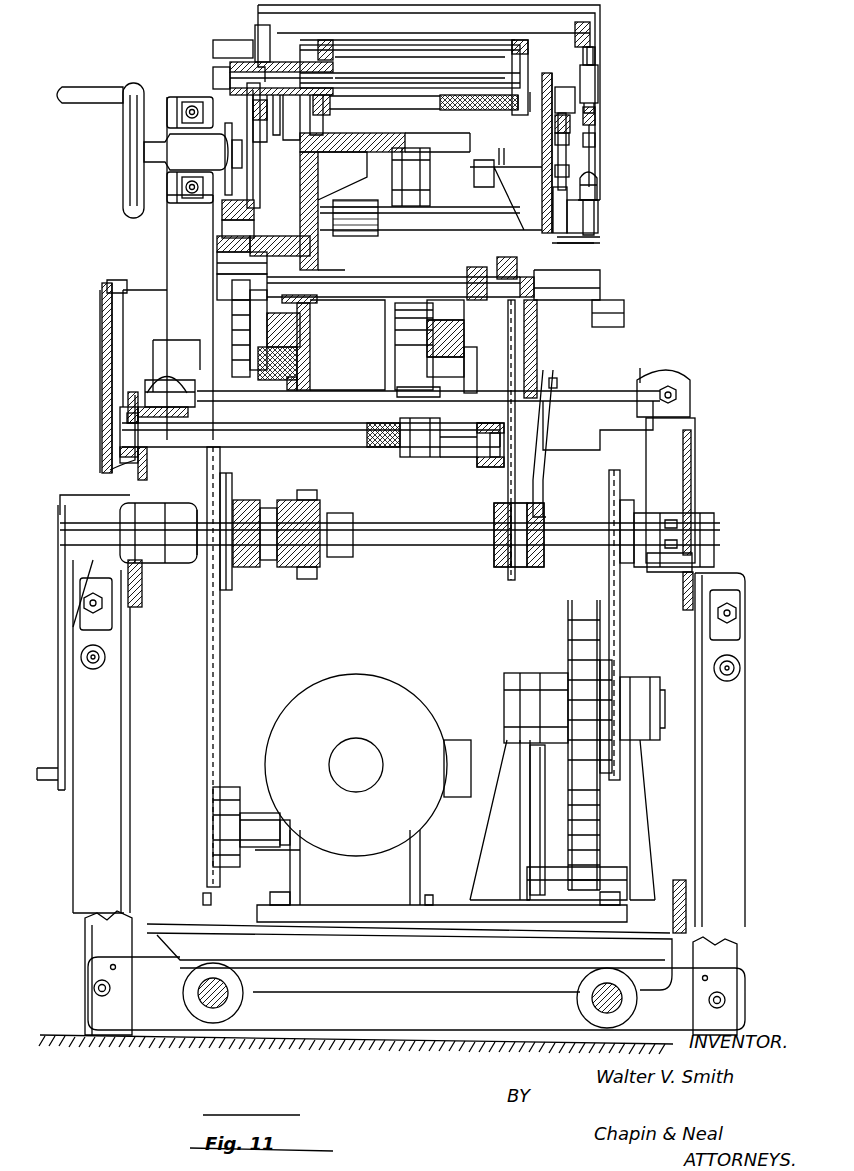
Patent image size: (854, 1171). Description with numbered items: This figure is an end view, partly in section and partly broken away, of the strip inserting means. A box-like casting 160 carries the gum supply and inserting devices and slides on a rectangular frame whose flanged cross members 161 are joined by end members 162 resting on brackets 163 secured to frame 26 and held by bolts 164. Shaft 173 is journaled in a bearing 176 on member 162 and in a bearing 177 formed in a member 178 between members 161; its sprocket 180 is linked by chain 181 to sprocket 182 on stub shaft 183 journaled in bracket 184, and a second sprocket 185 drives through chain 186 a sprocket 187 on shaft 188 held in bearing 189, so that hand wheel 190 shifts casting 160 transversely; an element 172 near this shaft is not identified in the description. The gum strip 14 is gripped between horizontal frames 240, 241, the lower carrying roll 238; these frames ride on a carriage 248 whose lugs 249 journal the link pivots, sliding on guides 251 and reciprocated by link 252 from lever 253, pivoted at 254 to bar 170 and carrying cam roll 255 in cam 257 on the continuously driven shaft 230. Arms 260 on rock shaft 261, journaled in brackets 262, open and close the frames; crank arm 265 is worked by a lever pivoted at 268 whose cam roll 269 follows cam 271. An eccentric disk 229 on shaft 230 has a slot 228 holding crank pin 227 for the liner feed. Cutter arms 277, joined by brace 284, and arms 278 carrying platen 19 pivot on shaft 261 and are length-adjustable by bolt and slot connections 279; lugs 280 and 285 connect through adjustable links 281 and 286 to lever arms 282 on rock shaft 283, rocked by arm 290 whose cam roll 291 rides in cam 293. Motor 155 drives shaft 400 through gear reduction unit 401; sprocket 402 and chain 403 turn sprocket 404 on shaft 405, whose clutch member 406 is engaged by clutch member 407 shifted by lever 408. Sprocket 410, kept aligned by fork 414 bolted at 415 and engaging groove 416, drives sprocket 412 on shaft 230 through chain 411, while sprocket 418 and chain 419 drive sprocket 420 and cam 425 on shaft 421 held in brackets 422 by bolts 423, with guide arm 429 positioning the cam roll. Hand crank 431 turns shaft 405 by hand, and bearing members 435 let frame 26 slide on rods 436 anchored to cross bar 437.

The strip or web 14 is at (385, 60).
The platen 19 is at (568, 145).
The frame 26 is at (112, 635).
The motor 155 is at (348, 685).
The box-like casting 160 is at (336, 350).
The flanged cross members 161 is at (615, 392).
The end members 162 is at (215, 423).
The brackets 163 is at (695, 450).
The bolts 164 is at (155, 375).
The bar 170 is at (395, 402).
The nut 172 is at (422, 458).
The shaft 173 is at (392, 450).
The bearing 176 is at (135, 462).
The bearing 177 is at (480, 467).
The member 178 is at (495, 468).
The sprocket 180 is at (118, 415).
The chain 181 is at (123, 380).
The sprocket 182 is at (107, 283).
The stub shaft 183 is at (100, 320).
The bracket 184 is at (167, 250).
The second sprocket 185 is at (217, 285).
The chain 186 is at (217, 265).
The sprocket 187 is at (240, 110).
The shaft 188 is at (250, 200).
The bearing 189 is at (172, 135).
The hand wheel 190 is at (122, 147).
The crank pin 227 is at (625, 318).
The slot 228 is at (600, 275).
The eccentric disk 229 is at (600, 288).
The shaft 230 is at (413, 317).
The roll 238 is at (495, 112).
The horizontal frame 240 is at (470, 30).
The horizontal frame 241 is at (445, 112).
The carriage 248 is at (410, 140).
The lugs 249 is at (355, 130).
The guides 251 is at (340, 165).
The link 252 is at (410, 188).
The lever 253 is at (398, 268).
The pivot 254 is at (410, 330).
The cam roll 255 is at (498, 265).
The cam 257 is at (485, 375).
The arms 260 is at (340, 35).
The rock shaft 261 is at (430, 58).
The brackets 262 is at (297, 60).
The crank arm 265 is at (240, 85).
The pivot 268 is at (268, 380).
The cam roll 269 is at (217, 246).
The cam 271 is at (312, 247).
The cutter arms 277 is at (592, 30).
The arms 278 is at (596, 125).
The bolt and slot connections 279 is at (570, 122).
The lugs 280 is at (600, 57).
The adjustable links 281 is at (598, 180).
The lever arms 282 is at (360, 215).
The rock shaft 283 is at (368, 228).
The brace 284 is at (600, 12).
The lug 285 is at (576, 100).
The adjustable links 286 is at (568, 190).
The arm 290 is at (222, 215).
The cam roll 291 is at (222, 230).
The cam 293 is at (210, 340).
The shaft 400 is at (250, 810).
The gear reduction unit 401 is at (285, 850).
The sprocket 402 is at (225, 888).
The chain 403 is at (220, 668).
The sprocket 404 is at (258, 568).
The shaft 405 is at (440, 550).
The clutch member 406 is at (240, 500).
The clutch member 407 is at (295, 568).
The clutch shifting lever 408 is at (85, 540).
The sprocket 410 is at (497, 575).
The chain 411 is at (505, 408).
The sprocket 412 is at (465, 340).
The fork 414 is at (545, 488).
The bolted connection 415 is at (560, 383).
The groove 416 is at (540, 520).
The sprocket 418 is at (628, 498).
The chain 419 is at (625, 618).
The sprocket 420 is at (612, 668).
The shaft 421 is at (690, 678).
The vertical brackets 422 is at (650, 790).
The bolts 423 is at (660, 850).
The cam 425 is at (568, 622).
The guide arm 429 is at (530, 836).
The hand crank 431 is at (67, 657).
The bearing members 435 is at (243, 985).
The horizontal rods 436 is at (228, 998).
The cross bar 437 is at (710, 978).